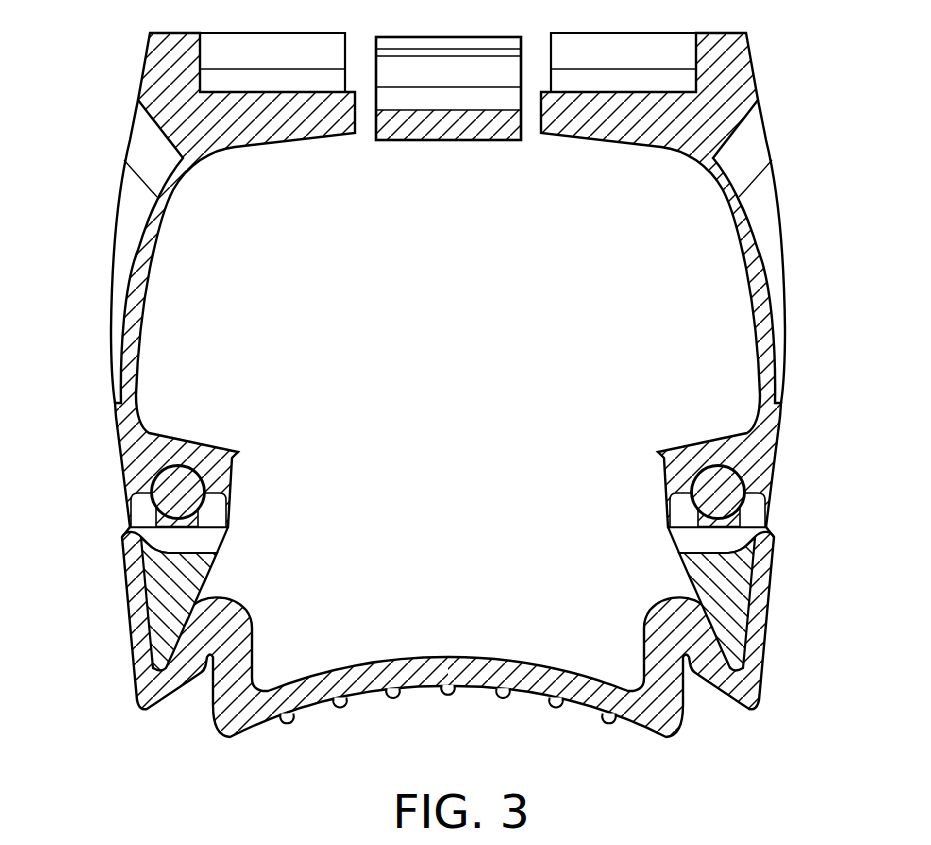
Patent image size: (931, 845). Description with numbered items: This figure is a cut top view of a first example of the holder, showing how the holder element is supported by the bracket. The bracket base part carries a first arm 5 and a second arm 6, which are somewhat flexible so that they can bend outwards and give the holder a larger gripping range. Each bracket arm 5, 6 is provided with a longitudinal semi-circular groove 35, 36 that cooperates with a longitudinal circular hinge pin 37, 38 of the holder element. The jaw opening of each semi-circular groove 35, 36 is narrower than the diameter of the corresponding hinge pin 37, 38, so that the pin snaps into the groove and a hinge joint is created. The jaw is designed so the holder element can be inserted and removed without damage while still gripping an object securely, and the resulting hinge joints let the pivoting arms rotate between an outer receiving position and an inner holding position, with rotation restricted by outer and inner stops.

The first arm 5 is at (769, 230).
The second arm 6 is at (127, 230).
The longitudinal semi-circular groove 35 is at (675, 508).
The longitudinal semi-circular groove 36 is at (221, 508).
The longitudinal circular hinge pin 37 is at (720, 488).
The longitudinal circular hinge pin 38 is at (176, 489).